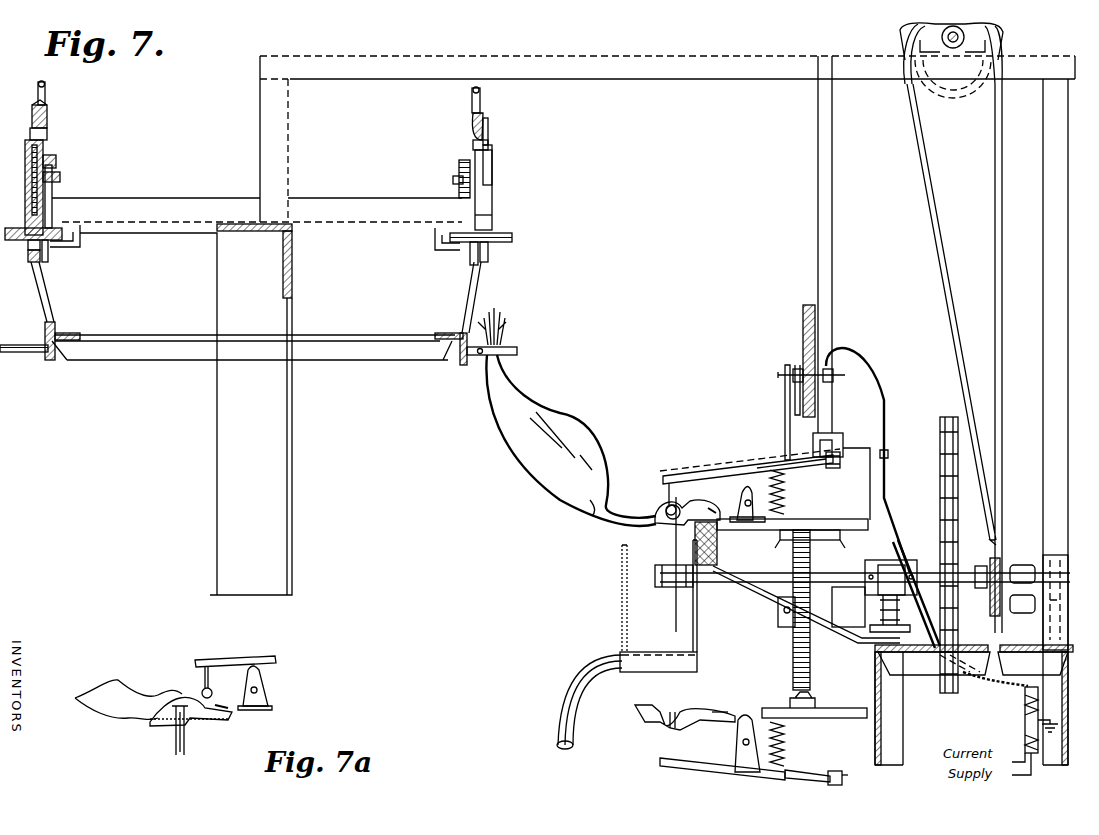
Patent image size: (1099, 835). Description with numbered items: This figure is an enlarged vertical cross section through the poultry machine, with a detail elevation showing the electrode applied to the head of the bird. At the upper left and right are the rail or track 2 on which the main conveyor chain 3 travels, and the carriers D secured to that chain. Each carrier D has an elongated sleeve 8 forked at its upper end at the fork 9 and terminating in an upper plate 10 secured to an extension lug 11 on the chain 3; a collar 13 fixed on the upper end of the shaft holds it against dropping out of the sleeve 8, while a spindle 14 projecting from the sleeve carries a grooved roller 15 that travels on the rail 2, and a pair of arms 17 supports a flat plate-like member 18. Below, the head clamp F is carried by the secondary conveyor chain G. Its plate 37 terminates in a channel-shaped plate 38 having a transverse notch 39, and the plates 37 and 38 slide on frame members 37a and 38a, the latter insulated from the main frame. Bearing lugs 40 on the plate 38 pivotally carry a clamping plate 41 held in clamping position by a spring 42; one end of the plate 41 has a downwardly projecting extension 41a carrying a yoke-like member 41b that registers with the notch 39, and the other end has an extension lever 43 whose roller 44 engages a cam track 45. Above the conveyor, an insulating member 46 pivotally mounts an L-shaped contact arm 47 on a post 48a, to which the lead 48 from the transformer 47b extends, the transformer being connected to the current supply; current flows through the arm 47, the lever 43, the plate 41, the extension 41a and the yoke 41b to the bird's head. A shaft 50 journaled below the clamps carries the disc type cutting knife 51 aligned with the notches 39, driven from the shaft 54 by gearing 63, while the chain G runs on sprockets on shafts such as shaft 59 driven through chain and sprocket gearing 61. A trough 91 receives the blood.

In FIG. 7, the rail or track 2 is at (57, 212).
In FIG. 7, the conveyor chain 3 is at (48, 86).
In FIG. 7, the elongated sleeve 8 is at (22, 182).
In FIG. 7, the fork 9 is at (28, 140).
In FIG. 7, the upper plate 10 is at (32, 121).
In FIG. 7, the extension lug 11 is at (48, 113).
In FIG. 7, the collar 13 is at (490, 153).
In FIG. 7, the spindle 14 is at (60, 180).
In FIG. 7, the grooved roller 15 is at (58, 164).
In FIG. 7, the arms 17 is at (48, 320).
In FIG. 7, the flat plate-like member 18 is at (25, 362).
In FIG. 7, the plate 37 is at (852, 524).
In FIG. 7, the frame member 37a is at (810, 545).
In FIG. 7, the plate 38 is at (668, 522).
In FIG. 7A, the plate 38 is at (160, 725).
In FIG. 7, the frame member 38a is at (722, 540).
In FIG. 7, the notch or slot 39 is at (673, 528).
In FIG. 7A, the notch or slot 39 is at (173, 735).
In FIG. 7, the bearing lugs 40 is at (740, 502).
In FIG. 7A, the bearing lugs 40 is at (278, 700).
In FIG. 7, the clamping plate 41 is at (724, 468).
In FIG. 7A, the clamping plate 41 is at (229, 658).
In FIG. 7, the downwardly projecting extension 41a is at (667, 480).
In FIG. 7A, the downwardly projecting extension 41a is at (204, 680).
In FIG. 7, the yoke-like member 41b is at (663, 507).
In FIG. 7A, the yoke-like member 41b is at (202, 690).
In FIG. 7, the spring 42 is at (783, 492).
In FIG. 7, the extension lever 43 is at (813, 470).
In FIG. 7, the roller 44 is at (840, 468).
In FIG. 7, the cam track 45 is at (835, 433).
In FIG. 7, the insulating member 46 is at (805, 325).
In FIG. 7, the contact arm 47 is at (785, 418).
In FIG. 7, the transformer 47b is at (1025, 722).
In FIG. 7, the lead 48 is at (878, 373).
In FIG. 7, the post 48a is at (778, 377).
In FIG. 7, the shaft 50 is at (933, 572).
In FIG. 7, the disc type cutting knife 51 is at (676, 602).
In FIG. 7A, the disc type cutting knife 51 is at (190, 742).
In FIG. 7, the shaft 54 is at (940, 38).
In FIG. 7, the shaft 59 is at (852, 606).
In FIG. 7, the chain and sprocket gearing 61 is at (940, 445).
In FIG. 7, the gearing 63 is at (995, 203).
In FIG. 7, the trough 91 is at (622, 593).
In FIG. 7, the carriers D is at (45, 297).
In FIG. 7, the head clamp F is at (744, 470).
In FIG. 7, the secondary conveyor chain G is at (785, 540).